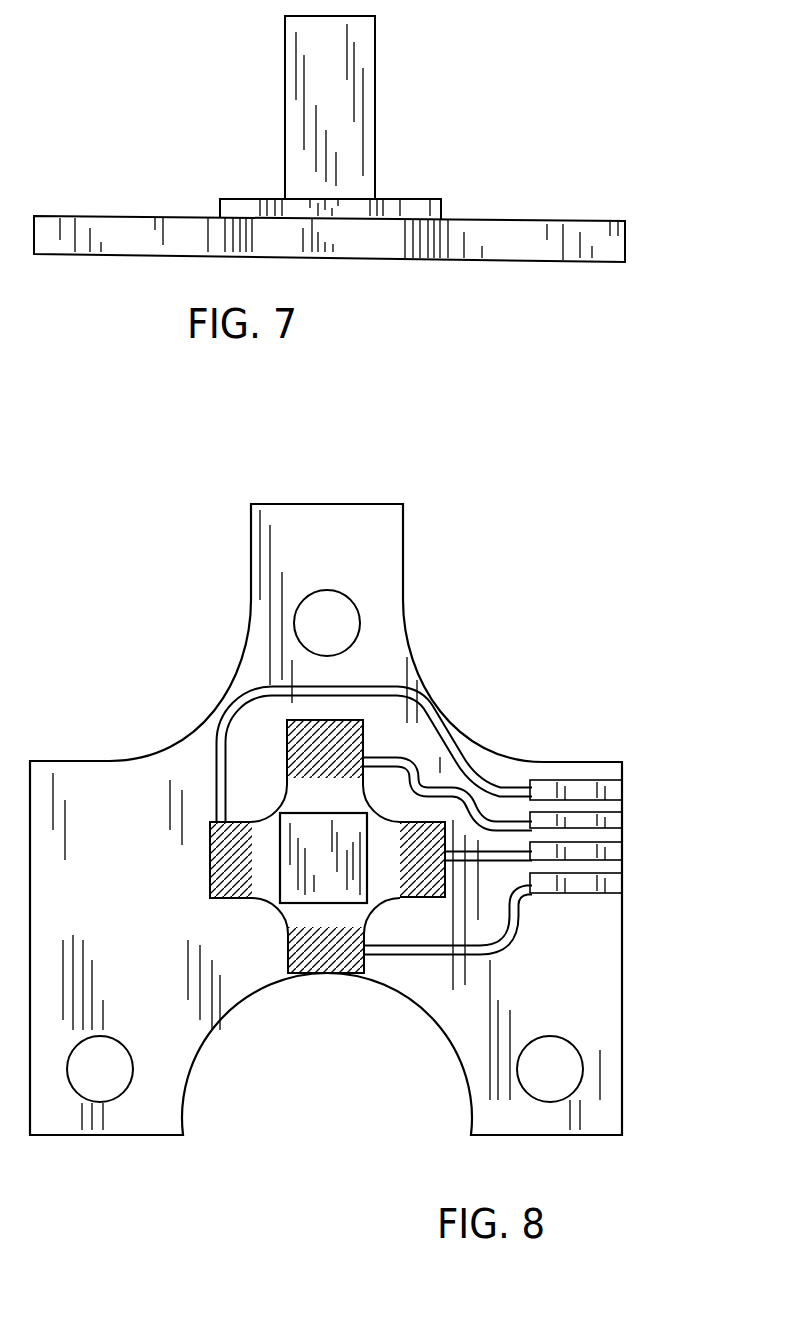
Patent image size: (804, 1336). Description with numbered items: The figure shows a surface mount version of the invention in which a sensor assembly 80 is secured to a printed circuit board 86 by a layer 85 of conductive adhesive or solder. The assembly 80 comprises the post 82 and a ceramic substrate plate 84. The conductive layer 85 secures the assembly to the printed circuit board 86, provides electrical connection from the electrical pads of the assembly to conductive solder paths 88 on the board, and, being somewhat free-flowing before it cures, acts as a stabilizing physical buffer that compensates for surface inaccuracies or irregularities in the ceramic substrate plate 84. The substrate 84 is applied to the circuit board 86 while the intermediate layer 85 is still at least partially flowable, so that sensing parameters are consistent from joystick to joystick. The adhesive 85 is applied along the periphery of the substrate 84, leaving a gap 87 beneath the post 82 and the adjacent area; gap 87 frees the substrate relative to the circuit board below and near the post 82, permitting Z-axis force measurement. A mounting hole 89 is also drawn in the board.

In FIG. 7, the sensor assembly 80 is at (276, 121).
In FIG. 7, the post 82 is at (377, 87).
In FIG. 8, the post 82 is at (327, 835).
In FIG. 7, the ceramic substrate plate 84 is at (243, 198).
In FIG. 8, the ceramic substrate plate 84 is at (267, 850).
In FIG. 7, the layer of conductive adhesive or solder 85 is at (450, 212).
In FIG. 8, the layer of conductive adhesive or solder 85 is at (340, 735).
In FIG. 7, the printed circuit board 86 is at (100, 231).
In FIG. 8, the printed circuit board 86 is at (73, 812).
In FIG. 8, the gap 87 is at (273, 868).
In FIG. 8, the conductive solder paths 88 is at (475, 768).
In FIG. 8, the mounting hole 89 is at (302, 625).